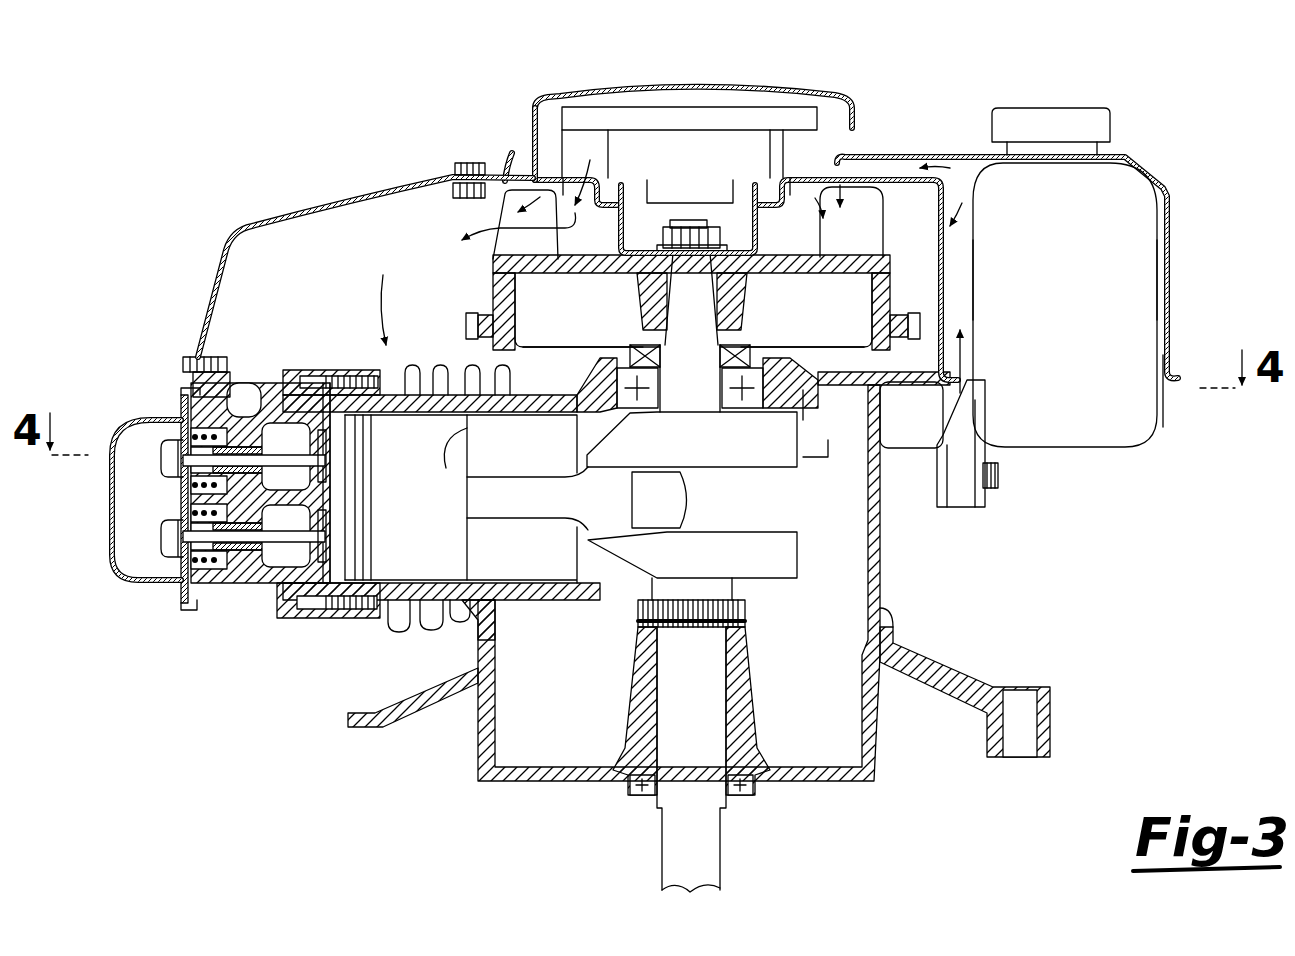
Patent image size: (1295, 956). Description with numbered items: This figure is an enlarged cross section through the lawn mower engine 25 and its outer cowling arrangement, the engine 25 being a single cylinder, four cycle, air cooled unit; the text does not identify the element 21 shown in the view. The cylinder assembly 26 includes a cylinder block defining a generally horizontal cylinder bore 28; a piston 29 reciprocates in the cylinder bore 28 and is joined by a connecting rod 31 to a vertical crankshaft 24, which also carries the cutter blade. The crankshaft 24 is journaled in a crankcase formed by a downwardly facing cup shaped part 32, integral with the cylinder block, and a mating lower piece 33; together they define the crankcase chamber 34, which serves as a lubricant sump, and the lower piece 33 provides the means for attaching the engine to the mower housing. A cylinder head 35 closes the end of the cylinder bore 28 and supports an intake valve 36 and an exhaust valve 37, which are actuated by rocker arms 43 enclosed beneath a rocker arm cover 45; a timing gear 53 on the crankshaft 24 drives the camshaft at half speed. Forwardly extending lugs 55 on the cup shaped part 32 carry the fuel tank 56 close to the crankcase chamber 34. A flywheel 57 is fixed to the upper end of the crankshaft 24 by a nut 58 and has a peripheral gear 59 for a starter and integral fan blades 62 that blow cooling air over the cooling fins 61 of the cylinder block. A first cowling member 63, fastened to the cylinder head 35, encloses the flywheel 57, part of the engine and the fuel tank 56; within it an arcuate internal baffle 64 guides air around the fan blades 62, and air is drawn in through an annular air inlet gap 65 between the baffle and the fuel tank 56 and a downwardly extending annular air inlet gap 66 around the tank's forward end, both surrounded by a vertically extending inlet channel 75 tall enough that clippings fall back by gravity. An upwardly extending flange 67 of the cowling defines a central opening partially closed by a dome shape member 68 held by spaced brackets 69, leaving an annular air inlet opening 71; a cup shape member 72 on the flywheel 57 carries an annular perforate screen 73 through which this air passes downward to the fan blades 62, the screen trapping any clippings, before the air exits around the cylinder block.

The engine 21 is at (430, 390).
The crankshaft 24 is at (683, 770).
The engine 25 is at (895, 565).
The cylinder assembly 26 is at (327, 640).
The cylinder bore 28 is at (397, 572).
The piston 29 is at (450, 465).
The connecting rod 31 is at (505, 495).
The cup shaped part 32 is at (880, 593).
The lower piece 33 is at (947, 695).
The crankcase chamber 34 is at (810, 649).
The cylinder head 35 is at (252, 417).
The intake valve 36 is at (262, 575).
The exhaust valve 37 is at (180, 417).
The rocker arms 43 is at (160, 437).
The rocker arm cover 45 is at (110, 510).
The timing gear 53 is at (640, 603).
The lugs 55 is at (912, 497).
The fuel tank 56 is at (1100, 423).
The flywheel 57 is at (497, 297).
The nut 58 is at (692, 233).
The peripheral gear 59 is at (473, 317).
The cooling fins 61 is at (428, 628).
The fan blades 62 is at (508, 212).
The first cowling member 63 is at (347, 193).
The internal baffle 64 is at (968, 215).
The annular air inlet gap 65 is at (952, 383).
The downwardly extending annular air inlet gap 66 is at (1168, 360).
The upwardly extending flange 67 is at (511, 155).
The dome shape member 68 is at (672, 85).
The brackets 69 is at (522, 140).
The annular air inlet opening 71 is at (530, 125).
The cup shape member 72 is at (742, 197).
The annular perforate screen 73 is at (560, 175).
The vertically extending inlet channel 75 is at (973, 280).